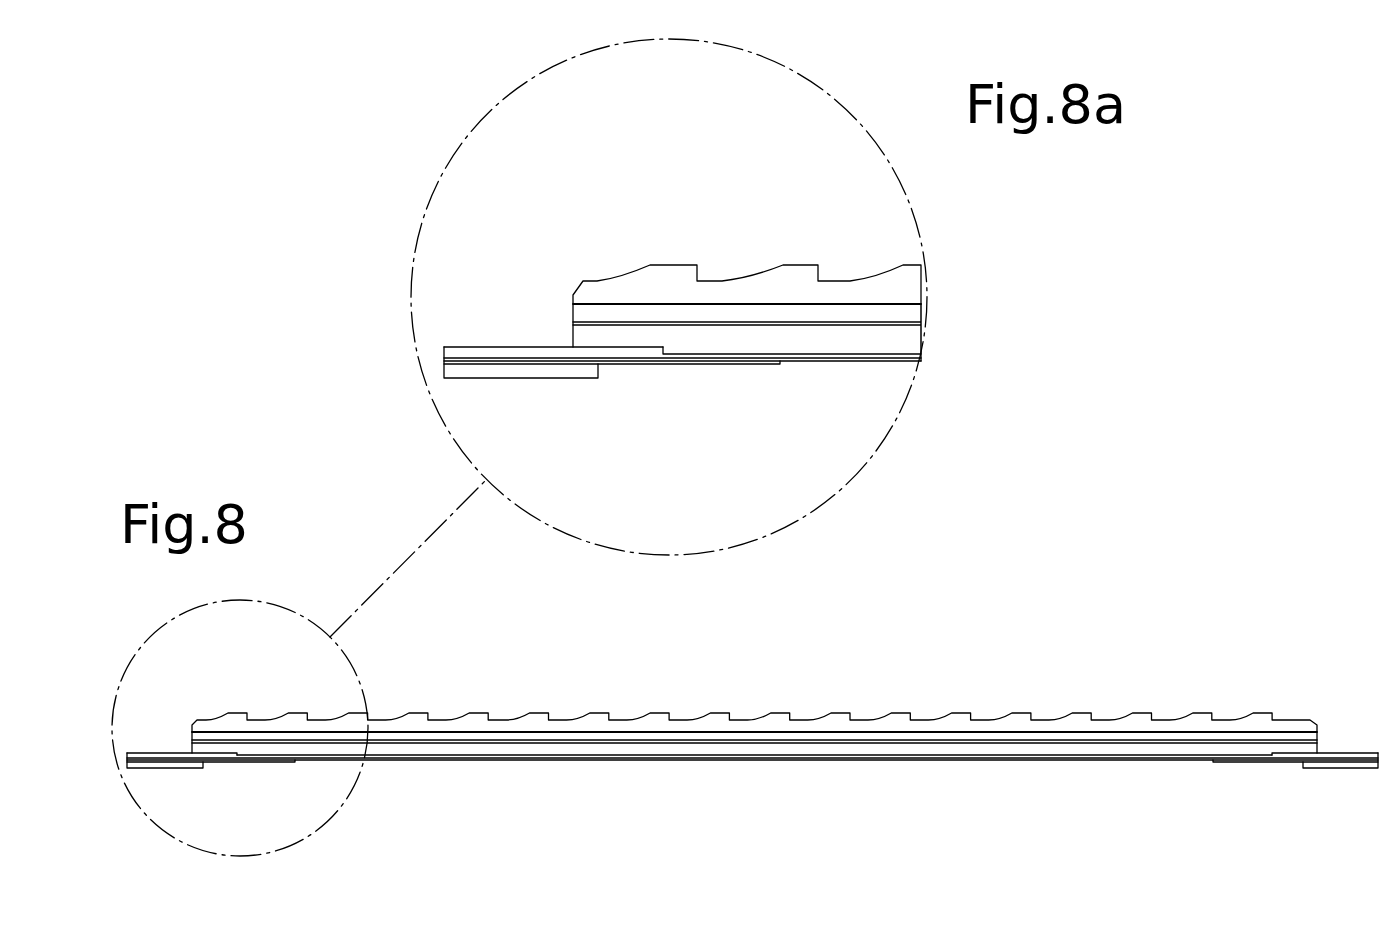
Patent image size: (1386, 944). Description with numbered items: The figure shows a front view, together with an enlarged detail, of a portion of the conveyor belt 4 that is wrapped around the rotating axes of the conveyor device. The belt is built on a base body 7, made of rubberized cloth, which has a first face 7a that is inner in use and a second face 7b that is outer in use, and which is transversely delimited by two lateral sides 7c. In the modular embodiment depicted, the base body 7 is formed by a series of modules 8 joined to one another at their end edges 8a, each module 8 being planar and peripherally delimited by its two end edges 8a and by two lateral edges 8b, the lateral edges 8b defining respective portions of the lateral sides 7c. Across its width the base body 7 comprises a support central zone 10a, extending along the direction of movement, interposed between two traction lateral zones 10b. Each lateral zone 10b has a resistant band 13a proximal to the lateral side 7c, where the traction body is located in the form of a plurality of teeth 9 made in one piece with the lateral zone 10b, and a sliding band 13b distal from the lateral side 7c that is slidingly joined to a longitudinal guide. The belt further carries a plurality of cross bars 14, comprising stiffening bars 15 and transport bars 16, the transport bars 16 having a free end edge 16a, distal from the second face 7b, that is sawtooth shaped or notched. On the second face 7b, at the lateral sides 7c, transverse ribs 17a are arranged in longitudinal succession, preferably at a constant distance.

In FIG. 8, the conveyor belt 4 is at (972, 662).
In FIG. 8A, the base body 7 is at (855, 385).
In FIG. 8, the first face 7a is at (937, 760).
In FIG. 8A, the first face 7a is at (828, 361).
In FIG. 8, the second face 7b is at (1048, 757).
In FIG. 8A, the second face 7b is at (841, 354).
In FIG. 8, the lateral sides 7c is at (157, 753).
In FIG. 8A, the lateral sides 7c is at (480, 347).
In FIG. 8, the module 8 is at (420, 665).
In FIG. 8, the end edges 8a is at (568, 748).
In FIG. 8, the lateral edges 8b is at (133, 753).
In FIG. 8A, the teeth 9 is at (487, 378).
In FIG. 8, the support central zone 10a is at (677, 760).
In FIG. 8A, the support central zone 10a is at (887, 361).
In FIG. 8, the traction lateral zones 10b is at (248, 772).
In FIG. 8A, the traction lateral zones 10b is at (700, 390).
In FIG. 8A, the resistant band 13a is at (535, 378).
In FIG. 8A, the sliding band 13b is at (660, 365).
In FIG. 8, the cross bars 14 is at (597, 722).
In FIG. 8A, the cross bars 14 is at (630, 335).
In FIG. 8, the stiffening bars 15 is at (533, 748).
In FIG. 8A, the stiffening bars 15 is at (757, 338).
In FIG. 8, the transport bars 16 is at (728, 712).
In FIG. 8A, the transport bars 16 is at (678, 262).
In FIG. 8A, the free end edge 16a is at (798, 263).
In FIG. 8, the transverse ribs 17a is at (182, 753).
In FIG. 8A, the transverse ribs 17a is at (528, 347).